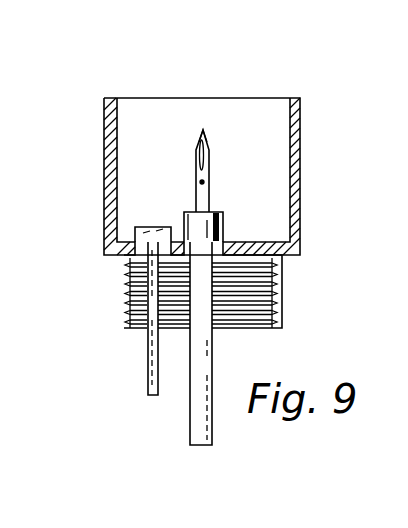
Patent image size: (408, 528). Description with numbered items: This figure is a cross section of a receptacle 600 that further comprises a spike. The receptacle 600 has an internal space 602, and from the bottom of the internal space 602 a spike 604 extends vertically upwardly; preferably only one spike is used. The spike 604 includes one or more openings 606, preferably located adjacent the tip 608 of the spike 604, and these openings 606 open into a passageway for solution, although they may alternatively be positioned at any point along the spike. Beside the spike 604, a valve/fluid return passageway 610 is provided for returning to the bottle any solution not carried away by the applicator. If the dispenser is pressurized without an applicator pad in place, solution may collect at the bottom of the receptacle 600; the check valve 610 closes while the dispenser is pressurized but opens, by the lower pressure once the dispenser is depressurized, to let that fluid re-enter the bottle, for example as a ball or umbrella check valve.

The receptacle 600 is at (104, 139).
The internal space 602 is at (141, 107).
The spike 604 is at (210, 163).
The opening 606 is at (197, 152).
The tip 608 is at (203, 131).
The valve/fluid return passageway 610 is at (148, 227).